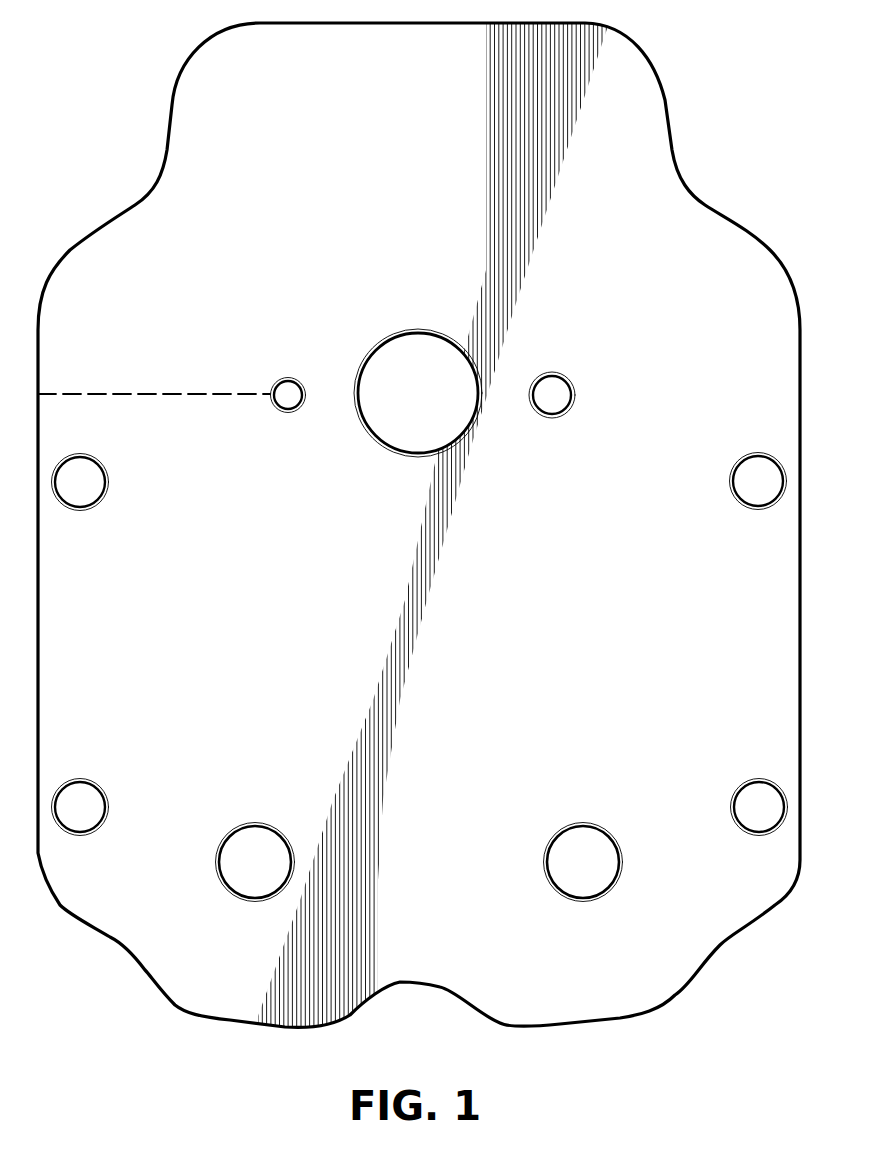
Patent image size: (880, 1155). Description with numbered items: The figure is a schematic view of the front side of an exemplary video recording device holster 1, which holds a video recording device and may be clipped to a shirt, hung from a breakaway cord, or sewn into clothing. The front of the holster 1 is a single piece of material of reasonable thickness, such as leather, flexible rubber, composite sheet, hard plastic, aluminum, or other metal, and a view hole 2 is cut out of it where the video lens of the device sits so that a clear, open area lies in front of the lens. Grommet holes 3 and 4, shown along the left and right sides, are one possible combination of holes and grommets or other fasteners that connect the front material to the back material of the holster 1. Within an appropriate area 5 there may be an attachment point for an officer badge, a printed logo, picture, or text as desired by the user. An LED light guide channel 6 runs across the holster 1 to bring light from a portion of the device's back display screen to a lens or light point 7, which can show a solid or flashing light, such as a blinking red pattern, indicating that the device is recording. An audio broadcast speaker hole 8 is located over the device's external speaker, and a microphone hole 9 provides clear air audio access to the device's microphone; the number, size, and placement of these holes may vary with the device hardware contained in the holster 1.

The video recording device holster 1 is at (36, 263).
The view hole 2 is at (373, 347).
The grommet holes 3 is at (80, 779).
The grommet holes 4 is at (762, 510).
The area 5 is at (377, 571).
The LED light guide channel 6 is at (152, 396).
The lens or light point 7 is at (271, 384).
The audio broadcast speaker hole 8 is at (257, 824).
The microphone hole 9 is at (577, 390).